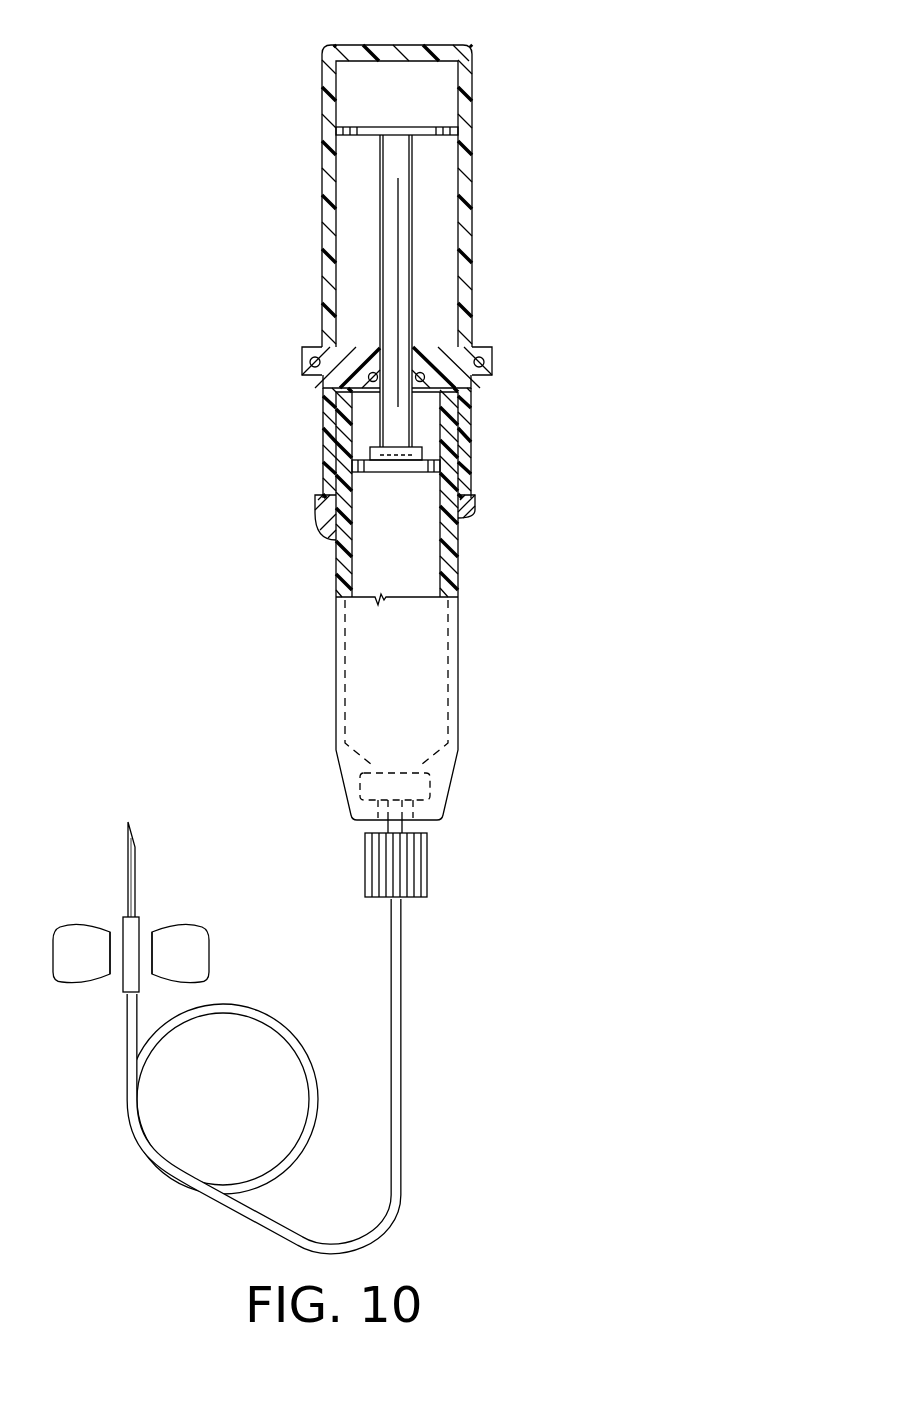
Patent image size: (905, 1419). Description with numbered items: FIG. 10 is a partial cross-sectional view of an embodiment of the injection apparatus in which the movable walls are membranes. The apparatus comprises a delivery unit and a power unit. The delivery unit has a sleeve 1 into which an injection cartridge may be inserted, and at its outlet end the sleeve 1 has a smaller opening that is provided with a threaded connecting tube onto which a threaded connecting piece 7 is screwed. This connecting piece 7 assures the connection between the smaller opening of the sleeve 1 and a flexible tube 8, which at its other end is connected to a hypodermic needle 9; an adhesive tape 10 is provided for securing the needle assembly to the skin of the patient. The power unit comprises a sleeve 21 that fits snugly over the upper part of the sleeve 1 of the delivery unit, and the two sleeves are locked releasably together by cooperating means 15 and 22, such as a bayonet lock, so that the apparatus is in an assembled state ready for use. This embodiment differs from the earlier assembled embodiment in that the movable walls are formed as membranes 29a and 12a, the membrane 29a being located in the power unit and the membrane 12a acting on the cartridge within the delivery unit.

The membrane 29a is at (438, 131).
The sleeve 21 is at (465, 441).
The membrane 12a is at (446, 471).
The locking means 22 is at (470, 510).
The locking means 15 is at (315, 500).
The sleeve 1 is at (318, 583).
The threaded connecting piece 7 is at (422, 867).
The flexible tube 8 is at (403, 1067).
The hypodermic needle 9 is at (136, 866).
The adhesive tape 10 is at (193, 956).